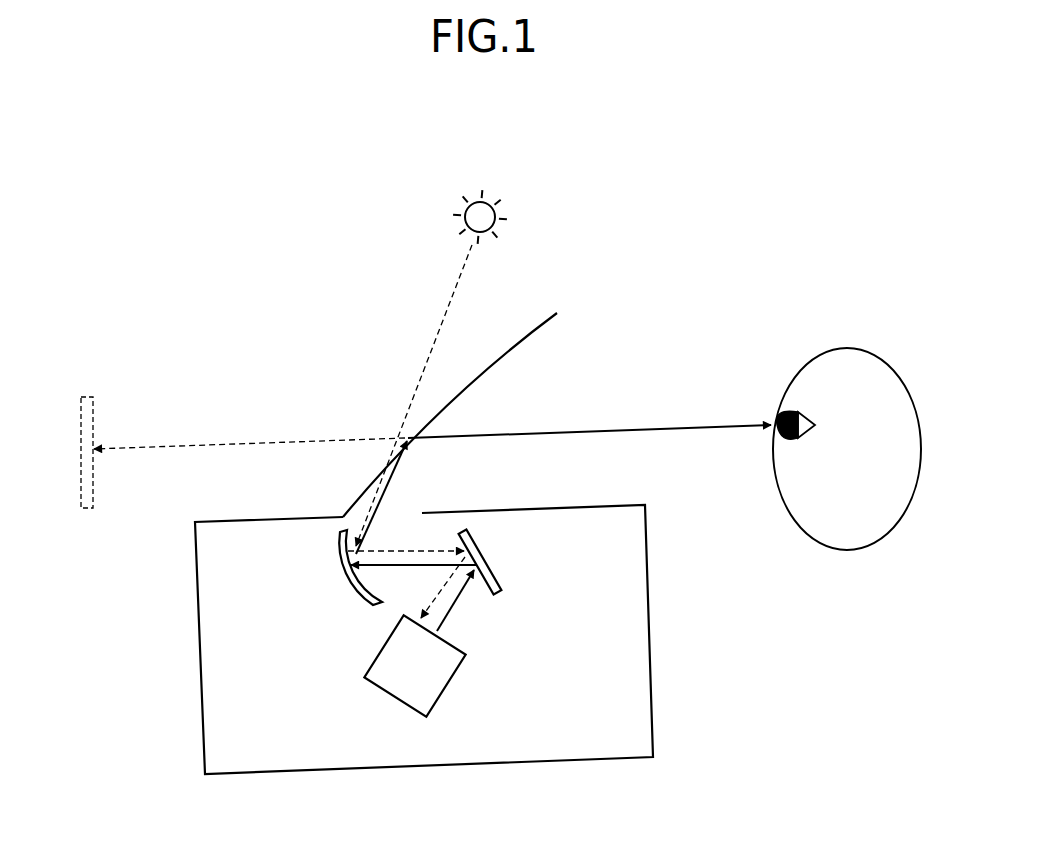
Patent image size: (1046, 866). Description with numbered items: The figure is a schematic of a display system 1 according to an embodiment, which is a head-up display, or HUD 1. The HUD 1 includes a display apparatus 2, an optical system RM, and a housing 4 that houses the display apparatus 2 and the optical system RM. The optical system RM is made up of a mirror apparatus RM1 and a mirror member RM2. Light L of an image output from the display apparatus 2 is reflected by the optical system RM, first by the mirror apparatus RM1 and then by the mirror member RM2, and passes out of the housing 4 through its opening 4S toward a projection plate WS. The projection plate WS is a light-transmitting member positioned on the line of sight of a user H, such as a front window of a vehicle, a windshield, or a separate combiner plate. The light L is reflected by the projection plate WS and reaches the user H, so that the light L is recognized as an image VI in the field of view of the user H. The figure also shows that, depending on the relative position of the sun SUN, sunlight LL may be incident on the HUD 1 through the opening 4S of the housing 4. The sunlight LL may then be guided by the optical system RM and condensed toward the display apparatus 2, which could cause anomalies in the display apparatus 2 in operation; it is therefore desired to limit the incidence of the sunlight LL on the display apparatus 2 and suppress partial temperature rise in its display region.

The display system 1 is at (455, 627).
The display apparatus 2 is at (449, 685).
The housing 4 is at (653, 713).
The opening 4S is at (396, 507).
The optical system RM is at (419, 585).
The mirror apparatus RM1 is at (485, 561).
The mirror member RM2 is at (351, 577).
The light L is at (618, 432).
The sunlight LL is at (446, 313).
The projection plate WS is at (484, 368).
The sun SUN is at (505, 185).
The image VI is at (87, 395).
The user H is at (847, 560).